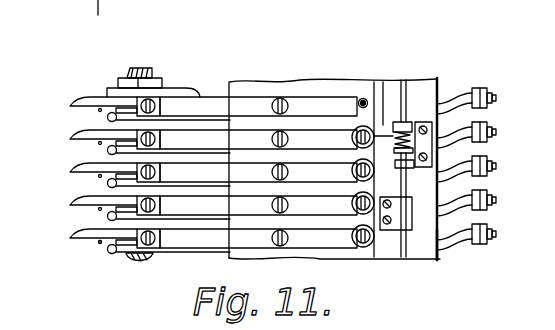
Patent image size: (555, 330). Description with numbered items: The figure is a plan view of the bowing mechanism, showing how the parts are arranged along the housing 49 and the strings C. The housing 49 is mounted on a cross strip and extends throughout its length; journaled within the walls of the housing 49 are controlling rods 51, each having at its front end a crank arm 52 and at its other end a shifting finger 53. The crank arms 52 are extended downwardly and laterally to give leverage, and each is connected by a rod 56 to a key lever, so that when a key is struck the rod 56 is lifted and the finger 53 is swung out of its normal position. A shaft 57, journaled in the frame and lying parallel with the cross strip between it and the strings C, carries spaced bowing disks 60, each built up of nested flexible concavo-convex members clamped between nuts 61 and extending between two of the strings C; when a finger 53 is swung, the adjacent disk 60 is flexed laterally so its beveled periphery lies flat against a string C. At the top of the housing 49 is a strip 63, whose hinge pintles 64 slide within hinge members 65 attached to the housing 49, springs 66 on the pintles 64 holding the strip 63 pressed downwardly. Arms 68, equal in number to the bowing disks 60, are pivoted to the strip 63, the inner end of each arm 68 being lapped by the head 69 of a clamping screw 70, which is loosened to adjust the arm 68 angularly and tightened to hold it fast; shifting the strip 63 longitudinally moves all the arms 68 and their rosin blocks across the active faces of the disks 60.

The housing 49 is at (440, 96).
The controlling rod 51 is at (442, 240).
The crank arm 52 is at (492, 103).
The shifting finger 53 is at (110, 109).
The rod 56 is at (489, 143).
The shaft 57 is at (141, 67).
The bowing disk 60 is at (73, 166).
The nut 61 is at (157, 85).
The strip 63 is at (395, 90).
The pintle 64 is at (408, 188).
The hinge member 65 is at (418, 121).
The spring 66 is at (395, 126).
The arm 68 is at (233, 104).
The head 69 is at (360, 127).
The clamping screw 70 is at (362, 99).
The strings C is at (99, 244).